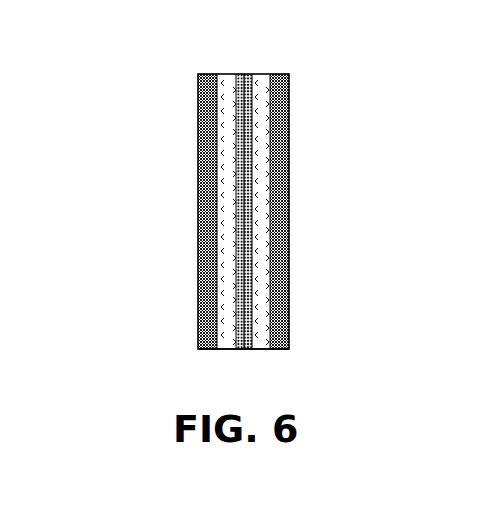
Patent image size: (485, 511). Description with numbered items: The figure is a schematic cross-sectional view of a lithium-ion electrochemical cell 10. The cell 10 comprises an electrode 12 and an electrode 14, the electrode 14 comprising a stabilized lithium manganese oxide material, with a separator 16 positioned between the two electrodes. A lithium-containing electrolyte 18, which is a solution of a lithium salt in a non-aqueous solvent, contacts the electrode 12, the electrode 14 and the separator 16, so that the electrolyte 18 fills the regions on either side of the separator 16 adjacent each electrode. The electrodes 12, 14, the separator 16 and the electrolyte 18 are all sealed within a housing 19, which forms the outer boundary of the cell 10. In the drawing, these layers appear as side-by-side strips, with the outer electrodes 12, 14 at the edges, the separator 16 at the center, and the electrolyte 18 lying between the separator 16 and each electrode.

The lithium-ion electrochemical cell 10 is at (154, 91).
The electrode 12 is at (199, 133).
The electrode 14 is at (290, 117).
The separator 16 is at (258, 340).
The lithium-containing electrolyte 18 is at (224, 200).
The housing 19 is at (265, 73).